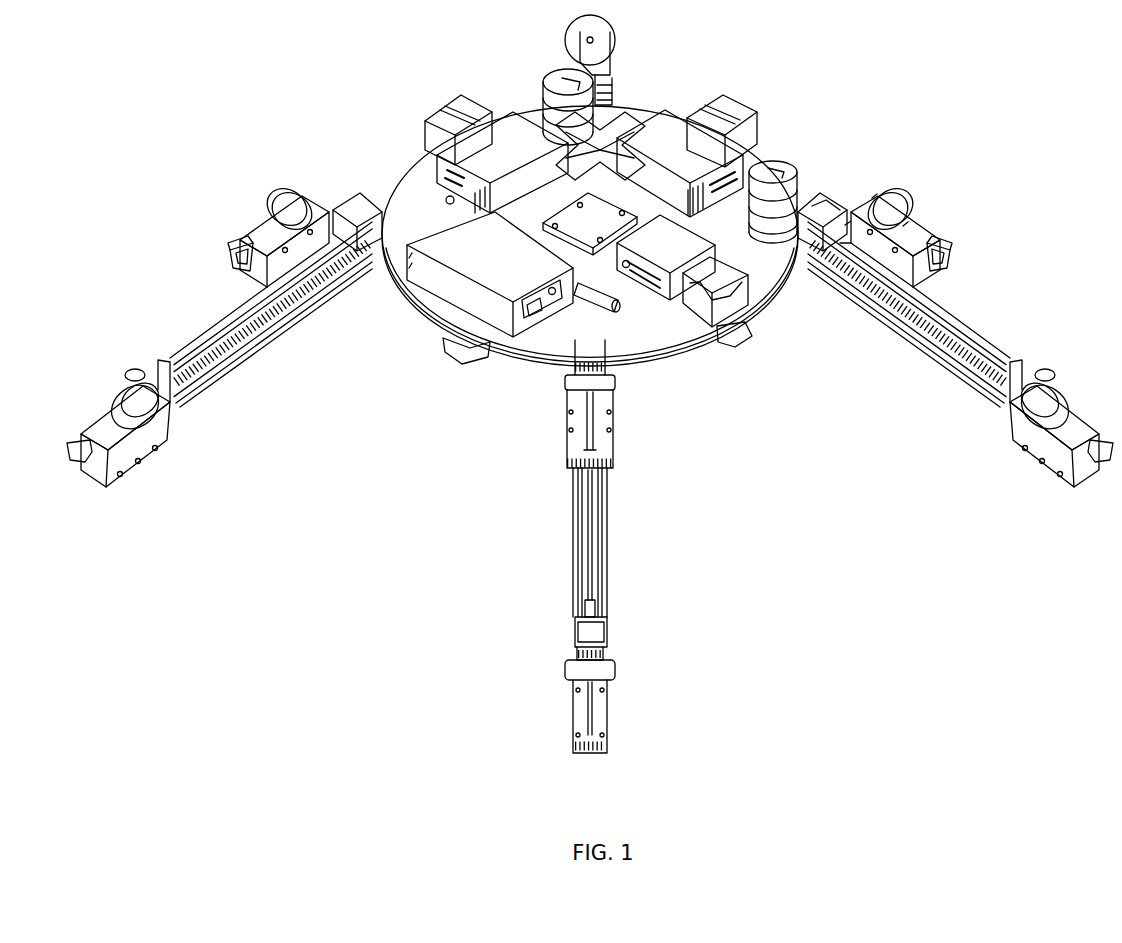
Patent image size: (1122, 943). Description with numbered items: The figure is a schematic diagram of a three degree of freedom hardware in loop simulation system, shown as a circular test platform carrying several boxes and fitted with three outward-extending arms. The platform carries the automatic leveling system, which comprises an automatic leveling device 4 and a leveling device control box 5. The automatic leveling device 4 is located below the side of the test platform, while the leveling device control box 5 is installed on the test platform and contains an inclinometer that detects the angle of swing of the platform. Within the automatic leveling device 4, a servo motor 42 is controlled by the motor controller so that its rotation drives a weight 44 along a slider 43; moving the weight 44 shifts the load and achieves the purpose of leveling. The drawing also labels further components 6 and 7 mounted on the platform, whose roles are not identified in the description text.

The automatic leveling device 4 is at (950, 326).
The servo motor 42 is at (828, 204).
The slider 43 is at (925, 246).
The weight 44 is at (795, 168).
The leveling device control box 5 is at (587, 223).
The driving motor 6 is at (745, 107).
The battery box 7 is at (498, 270).